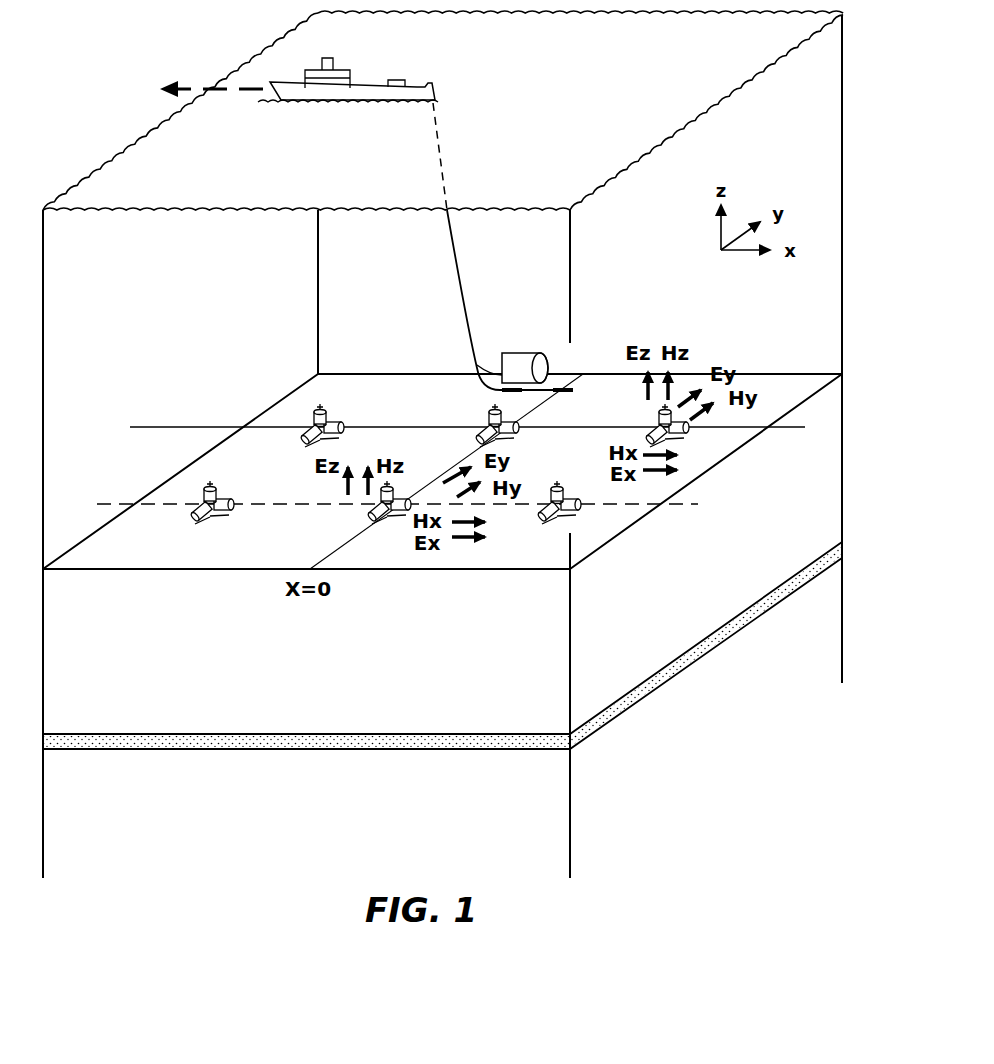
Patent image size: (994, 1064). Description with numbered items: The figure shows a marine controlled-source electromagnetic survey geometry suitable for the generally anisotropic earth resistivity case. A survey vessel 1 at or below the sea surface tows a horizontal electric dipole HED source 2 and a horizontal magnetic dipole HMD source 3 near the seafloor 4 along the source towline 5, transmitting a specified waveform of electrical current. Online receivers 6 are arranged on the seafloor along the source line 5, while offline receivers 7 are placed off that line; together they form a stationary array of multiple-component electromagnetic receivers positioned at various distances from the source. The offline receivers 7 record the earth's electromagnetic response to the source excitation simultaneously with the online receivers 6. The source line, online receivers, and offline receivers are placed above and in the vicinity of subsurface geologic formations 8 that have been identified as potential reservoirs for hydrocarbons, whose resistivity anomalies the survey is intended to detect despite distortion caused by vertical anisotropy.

The survey vessel 1 is at (347, 70).
The HED source 2 is at (560, 388).
The HMD source 3 is at (515, 352).
The seafloor 4 is at (100, 528).
The source towline 5 is at (158, 427).
The online receivers 6 is at (326, 413).
The offline receivers 7 is at (216, 492).
The subsurface geologic formations 8 is at (118, 743).